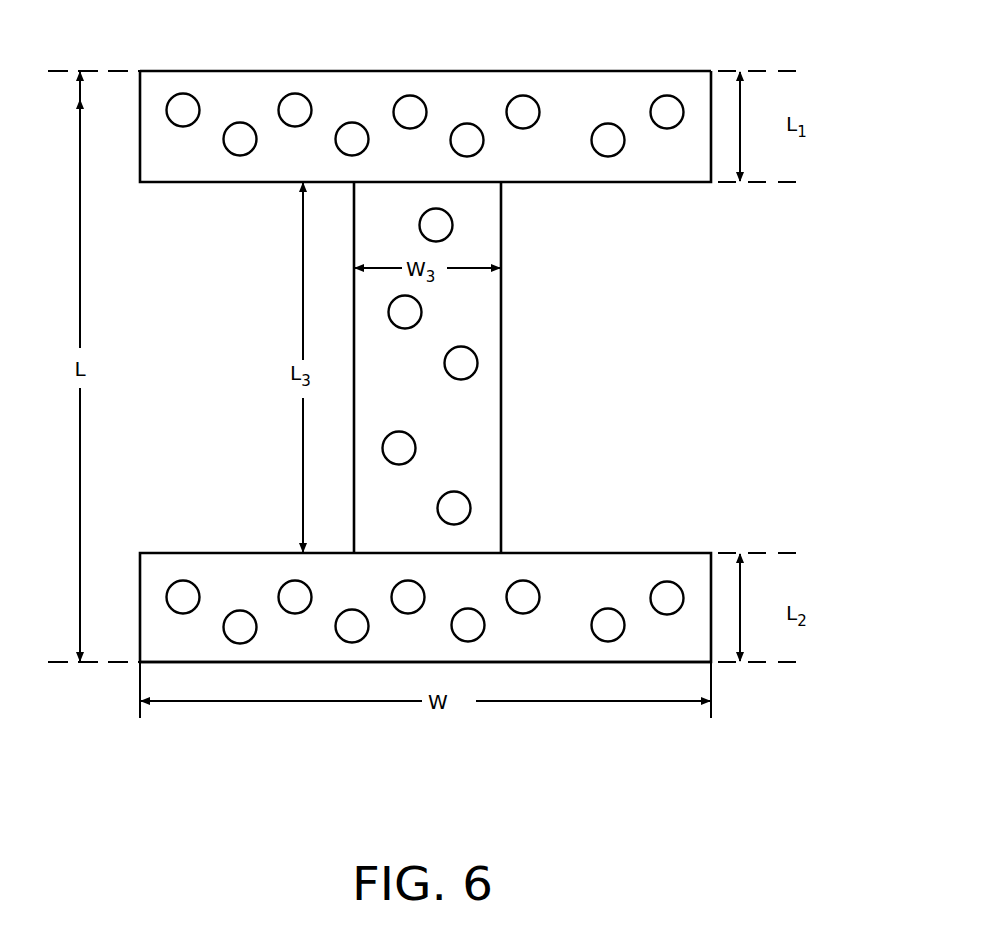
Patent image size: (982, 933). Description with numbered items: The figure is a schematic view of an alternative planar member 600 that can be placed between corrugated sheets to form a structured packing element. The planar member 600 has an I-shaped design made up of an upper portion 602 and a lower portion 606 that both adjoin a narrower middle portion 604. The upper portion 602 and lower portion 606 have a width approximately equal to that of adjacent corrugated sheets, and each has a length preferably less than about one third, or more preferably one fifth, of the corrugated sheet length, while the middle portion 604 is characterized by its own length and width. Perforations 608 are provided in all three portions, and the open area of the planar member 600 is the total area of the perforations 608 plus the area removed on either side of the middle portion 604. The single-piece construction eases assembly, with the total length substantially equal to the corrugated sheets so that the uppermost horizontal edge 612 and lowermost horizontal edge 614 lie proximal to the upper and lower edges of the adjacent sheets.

The planar member 600 is at (485, 386).
The upper portion 602 is at (425, 141).
The middle portion 604 is at (467, 336).
The lower portion 606 is at (640, 570).
The perforations 608 is at (522, 113).
The uppermost horizontal edge 612 is at (398, 71).
The lowermost horizontal edge 614 is at (450, 662).